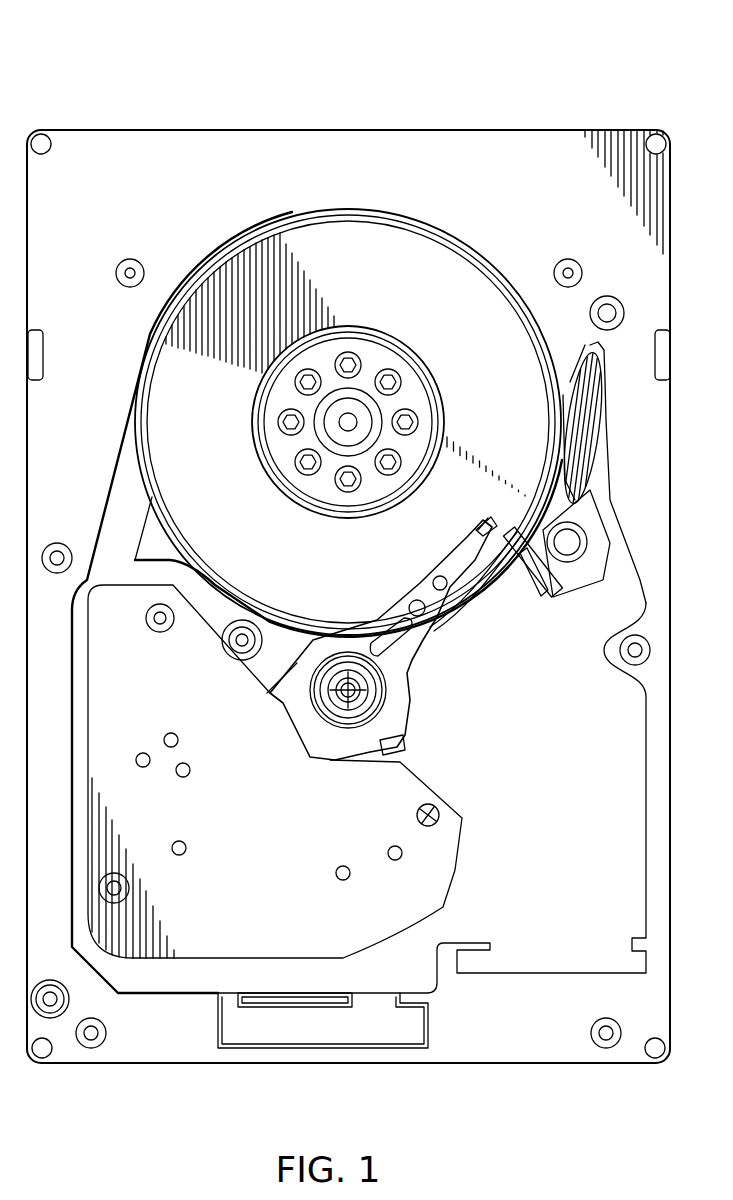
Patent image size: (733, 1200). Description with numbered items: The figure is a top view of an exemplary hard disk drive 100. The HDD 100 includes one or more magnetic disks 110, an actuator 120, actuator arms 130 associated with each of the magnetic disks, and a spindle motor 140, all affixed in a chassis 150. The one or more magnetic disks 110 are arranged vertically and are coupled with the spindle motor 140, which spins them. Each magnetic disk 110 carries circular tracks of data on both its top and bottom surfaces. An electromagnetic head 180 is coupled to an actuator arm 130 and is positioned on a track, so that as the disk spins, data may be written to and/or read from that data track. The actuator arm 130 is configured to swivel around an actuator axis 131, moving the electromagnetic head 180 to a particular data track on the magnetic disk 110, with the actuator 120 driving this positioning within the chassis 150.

The hard disk drive 100 is at (527, 58).
The chassis 150 is at (143, 130).
The magnetic disk 110 is at (432, 260).
The spindle motor 140 is at (335, 428).
The actuator arm 130 is at (427, 590).
The actuator axis 131 is at (353, 692).
The electromagnetic head 180 is at (482, 523).
The actuator 120 is at (437, 865).